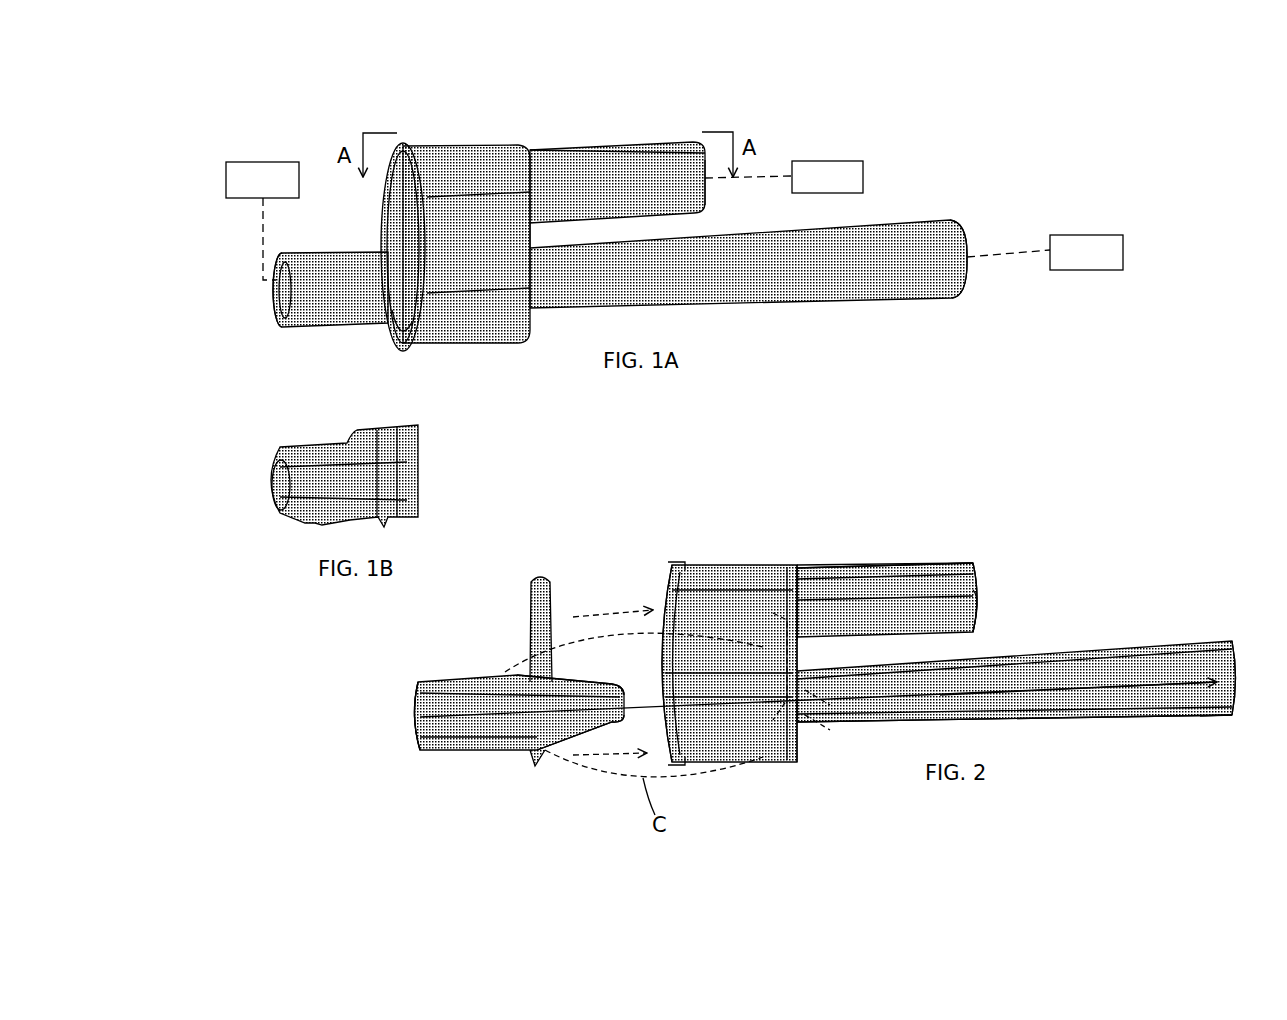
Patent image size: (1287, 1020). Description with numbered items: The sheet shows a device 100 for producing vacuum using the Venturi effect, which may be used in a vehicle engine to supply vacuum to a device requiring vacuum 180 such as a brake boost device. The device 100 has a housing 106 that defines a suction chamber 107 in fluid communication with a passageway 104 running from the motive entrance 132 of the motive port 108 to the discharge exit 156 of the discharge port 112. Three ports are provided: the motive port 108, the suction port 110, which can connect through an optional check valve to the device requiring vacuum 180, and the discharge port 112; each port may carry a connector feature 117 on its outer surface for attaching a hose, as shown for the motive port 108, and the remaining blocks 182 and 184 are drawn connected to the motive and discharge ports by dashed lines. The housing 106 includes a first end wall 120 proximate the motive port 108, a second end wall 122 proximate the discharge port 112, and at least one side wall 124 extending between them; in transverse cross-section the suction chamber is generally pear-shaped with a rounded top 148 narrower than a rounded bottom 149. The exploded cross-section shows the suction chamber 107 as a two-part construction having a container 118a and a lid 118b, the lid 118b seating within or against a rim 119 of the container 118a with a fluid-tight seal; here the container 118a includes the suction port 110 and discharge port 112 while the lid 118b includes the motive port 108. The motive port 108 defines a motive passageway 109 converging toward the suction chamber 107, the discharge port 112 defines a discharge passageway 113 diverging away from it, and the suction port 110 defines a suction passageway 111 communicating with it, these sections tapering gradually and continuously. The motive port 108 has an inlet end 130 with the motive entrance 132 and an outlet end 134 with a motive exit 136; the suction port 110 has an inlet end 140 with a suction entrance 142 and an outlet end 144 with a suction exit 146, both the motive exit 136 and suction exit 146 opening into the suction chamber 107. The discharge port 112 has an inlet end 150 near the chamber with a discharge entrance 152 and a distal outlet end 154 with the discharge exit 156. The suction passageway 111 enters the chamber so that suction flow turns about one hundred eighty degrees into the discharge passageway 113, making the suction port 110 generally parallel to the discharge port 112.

In FIG. 1A, the device 100 is at (928, 190).
In FIG. 2, the device 100 is at (1090, 598).
In FIG. 2, the passageway 104 is at (1007, 690).
In FIG. 1A, the housing 106 is at (493, 237).
In FIG. 2, the suction chamber 107 is at (742, 745).
In FIG. 1A, the motive port 108 is at (316, 327).
In FIG. 1B, the motive port 108 is at (310, 522).
In FIG. 2, the motive port 108 is at (462, 752).
In FIG. 2, the motive passageway 109 is at (546, 762).
In FIG. 1A, the suction port 110 is at (597, 143).
In FIG. 2, the suction port 110 is at (895, 563).
In FIG. 2, the suction passageway 111 is at (838, 580).
In FIG. 1A, the discharge port 112 is at (792, 304).
In FIG. 2, the discharge port 112 is at (1055, 714).
In FIG. 2, the discharge passageway 113 is at (893, 704).
In FIG. 1B, the connector feature 117 is at (341, 488).
In FIG. 2, the container 118a is at (727, 657).
In FIG. 2, the lid 118b is at (511, 671).
In FIG. 1A, the rim 119 is at (410, 340).
In FIG. 2, the rim 119 is at (672, 568).
In FIG. 1A, the first end wall 120 is at (384, 202).
In FIG. 2, the first end wall 120 is at (530, 615).
In FIG. 1A, the second end wall 122 is at (536, 230).
In FIG. 2, the second end wall 122 is at (803, 652).
In FIG. 1A, the side wall 124 is at (530, 320).
In FIG. 2, the side wall 124 is at (745, 565).
In FIG. 2, the inlet end 130 is at (426, 680).
In FIG. 1A, the motive entrance 132 is at (276, 300).
In FIG. 2, the motive entrance 132 is at (412, 717).
In FIG. 2, the outlet end 134 is at (615, 681).
In FIG. 2, the motive exit 136 is at (627, 718).
In FIG. 2, the inlet end 140 is at (975, 563).
In FIG. 1A, the suction entrance 142 is at (708, 195).
In FIG. 2, the suction entrance 142 is at (978, 606).
In FIG. 2, the outlet end 144 is at (800, 565).
In FIG. 2, the suction exit 146 is at (792, 601).
In FIG. 1A, the rounded top 148 is at (452, 147).
In FIG. 1A, the rounded bottom 149 is at (488, 344).
In FIG. 2, the inlet end 150 is at (804, 728).
In FIG. 2, the discharge entrance 152 is at (783, 713).
In FIG. 2, the outlet end 154 is at (1228, 717).
In FIG. 1A, the discharge exit 156 is at (969, 282).
In FIG. 2, the discharge exit 156 is at (1234, 682).
In FIG. 1A, the device requiring vacuum 180 is at (840, 161).
In FIG. 1A, the second device 182 is at (264, 162).
In FIG. 1A, the third device 184 is at (1084, 235).